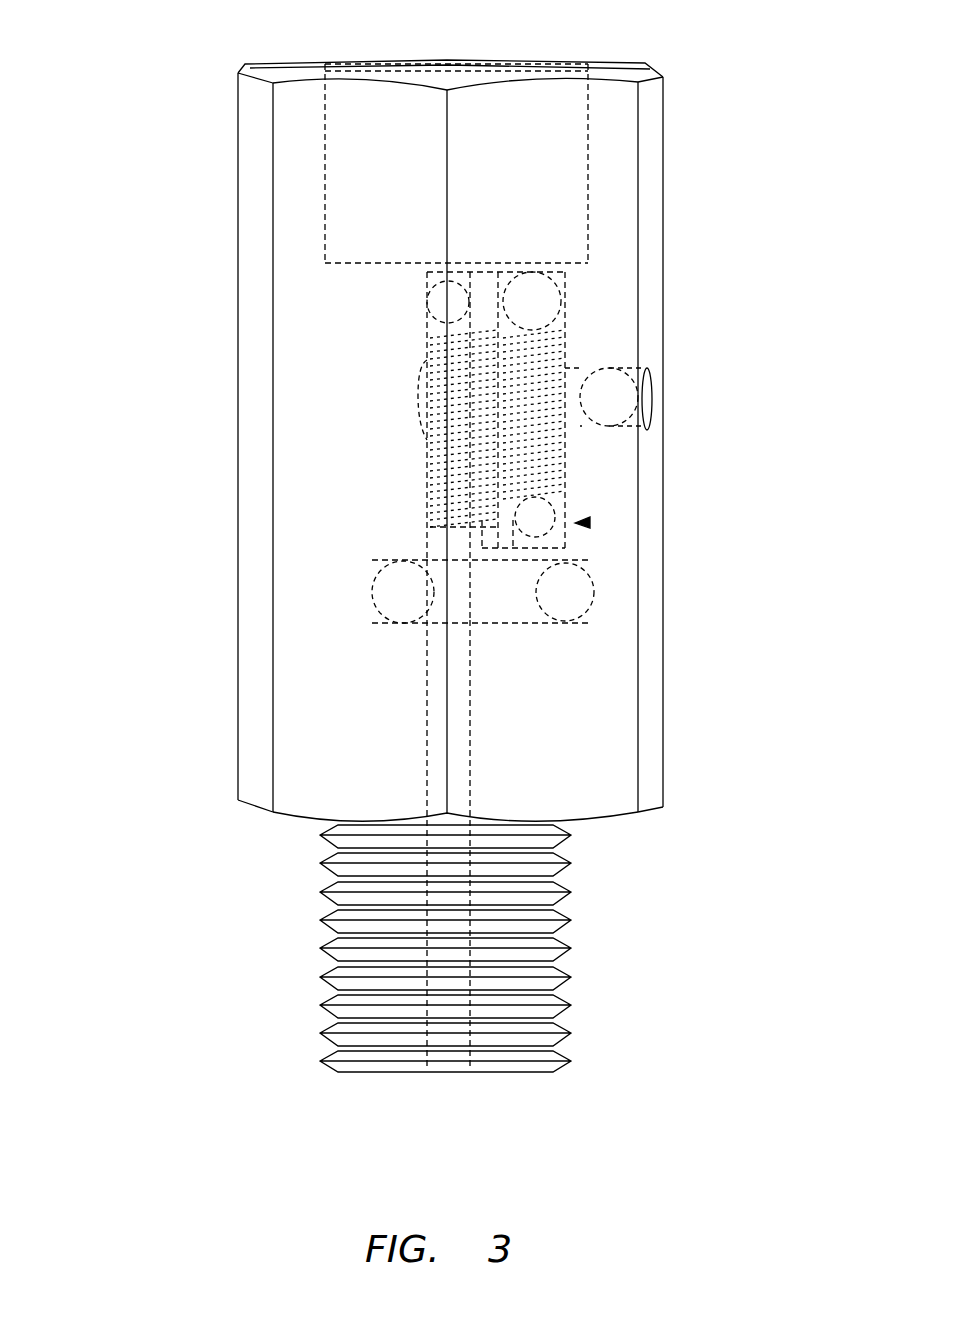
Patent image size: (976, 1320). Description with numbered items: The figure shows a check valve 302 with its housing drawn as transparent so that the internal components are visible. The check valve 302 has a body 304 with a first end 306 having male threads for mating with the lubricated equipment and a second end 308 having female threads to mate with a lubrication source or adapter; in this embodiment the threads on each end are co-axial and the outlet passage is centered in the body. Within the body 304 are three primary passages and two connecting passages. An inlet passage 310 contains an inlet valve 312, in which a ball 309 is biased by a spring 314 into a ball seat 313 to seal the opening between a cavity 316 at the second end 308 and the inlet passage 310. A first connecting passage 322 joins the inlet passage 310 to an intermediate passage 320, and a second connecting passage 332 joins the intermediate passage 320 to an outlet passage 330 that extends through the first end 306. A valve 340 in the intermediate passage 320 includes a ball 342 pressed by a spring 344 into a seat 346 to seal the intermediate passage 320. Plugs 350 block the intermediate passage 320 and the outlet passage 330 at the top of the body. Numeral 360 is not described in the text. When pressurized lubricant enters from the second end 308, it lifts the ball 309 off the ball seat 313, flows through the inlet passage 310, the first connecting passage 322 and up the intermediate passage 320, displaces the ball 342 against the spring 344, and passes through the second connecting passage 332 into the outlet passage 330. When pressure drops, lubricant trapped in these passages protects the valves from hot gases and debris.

The check valve 302 is at (116, 33).
The body 304 is at (664, 193).
The first end 306 is at (569, 1030).
The second end 308 is at (588, 138).
The ball 309 is at (428, 300).
The inlet passage 310 is at (430, 470).
The inlet valve 312 is at (405, 329).
The ball seat 313 is at (428, 316).
The spring 314 is at (430, 442).
The cavity 316 is at (558, 242).
The intermediate passage 320 is at (543, 523).
The first connecting passage 322 is at (518, 623).
The outlet passage 330 is at (468, 780).
The second connecting passage 332 is at (580, 367).
The valve 340 is at (590, 521).
The ball 342 is at (557, 517).
The spring 344 is at (563, 462).
The seat 346 is at (557, 527).
The plugs 350 is at (567, 307).
The outlet port 360 is at (385, 577).